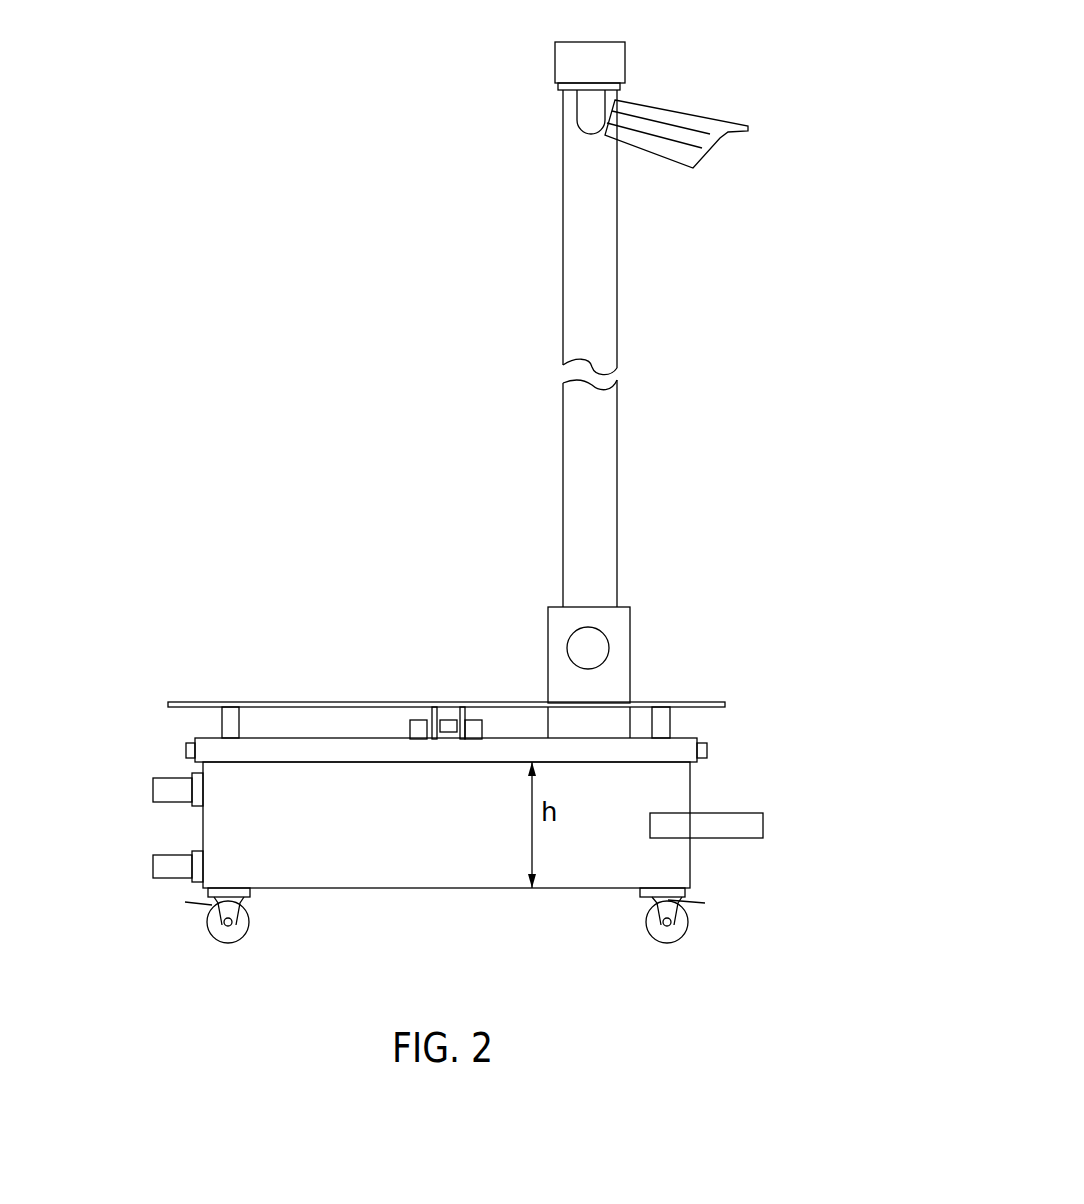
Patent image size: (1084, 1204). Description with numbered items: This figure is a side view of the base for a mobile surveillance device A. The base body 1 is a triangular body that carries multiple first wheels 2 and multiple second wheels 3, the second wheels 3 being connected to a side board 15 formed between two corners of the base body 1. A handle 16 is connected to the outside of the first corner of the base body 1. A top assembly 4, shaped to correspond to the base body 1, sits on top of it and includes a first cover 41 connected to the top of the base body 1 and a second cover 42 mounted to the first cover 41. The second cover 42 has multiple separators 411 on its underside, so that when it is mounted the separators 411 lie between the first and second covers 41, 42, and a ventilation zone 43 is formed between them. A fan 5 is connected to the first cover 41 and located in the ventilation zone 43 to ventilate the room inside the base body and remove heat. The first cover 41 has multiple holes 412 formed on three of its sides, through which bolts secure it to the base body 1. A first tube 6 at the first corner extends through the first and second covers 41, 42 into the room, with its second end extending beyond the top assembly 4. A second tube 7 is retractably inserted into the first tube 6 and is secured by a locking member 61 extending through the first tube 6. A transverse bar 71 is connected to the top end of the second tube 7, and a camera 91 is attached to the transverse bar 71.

The base body 1 is at (357, 890).
The first wheels 2 is at (693, 930).
The second wheels 3 is at (155, 878).
The top assembly 4 is at (257, 700).
The first cover 41 is at (205, 736).
The separators 411 is at (240, 725).
The holes 412 is at (186, 751).
The second cover 42 is at (213, 702).
The ventilation zone 43 is at (190, 715).
The fan 5 is at (487, 728).
The first tube 6 is at (547, 627).
The locking member 61 is at (610, 648).
The second tube 7 is at (563, 297).
The transverse bar 71 is at (555, 68).
The camera 91 is at (683, 108).
The side board 15 is at (200, 825).
The handle 16 is at (715, 813).
The mobile surveillance device A is at (245, 320).